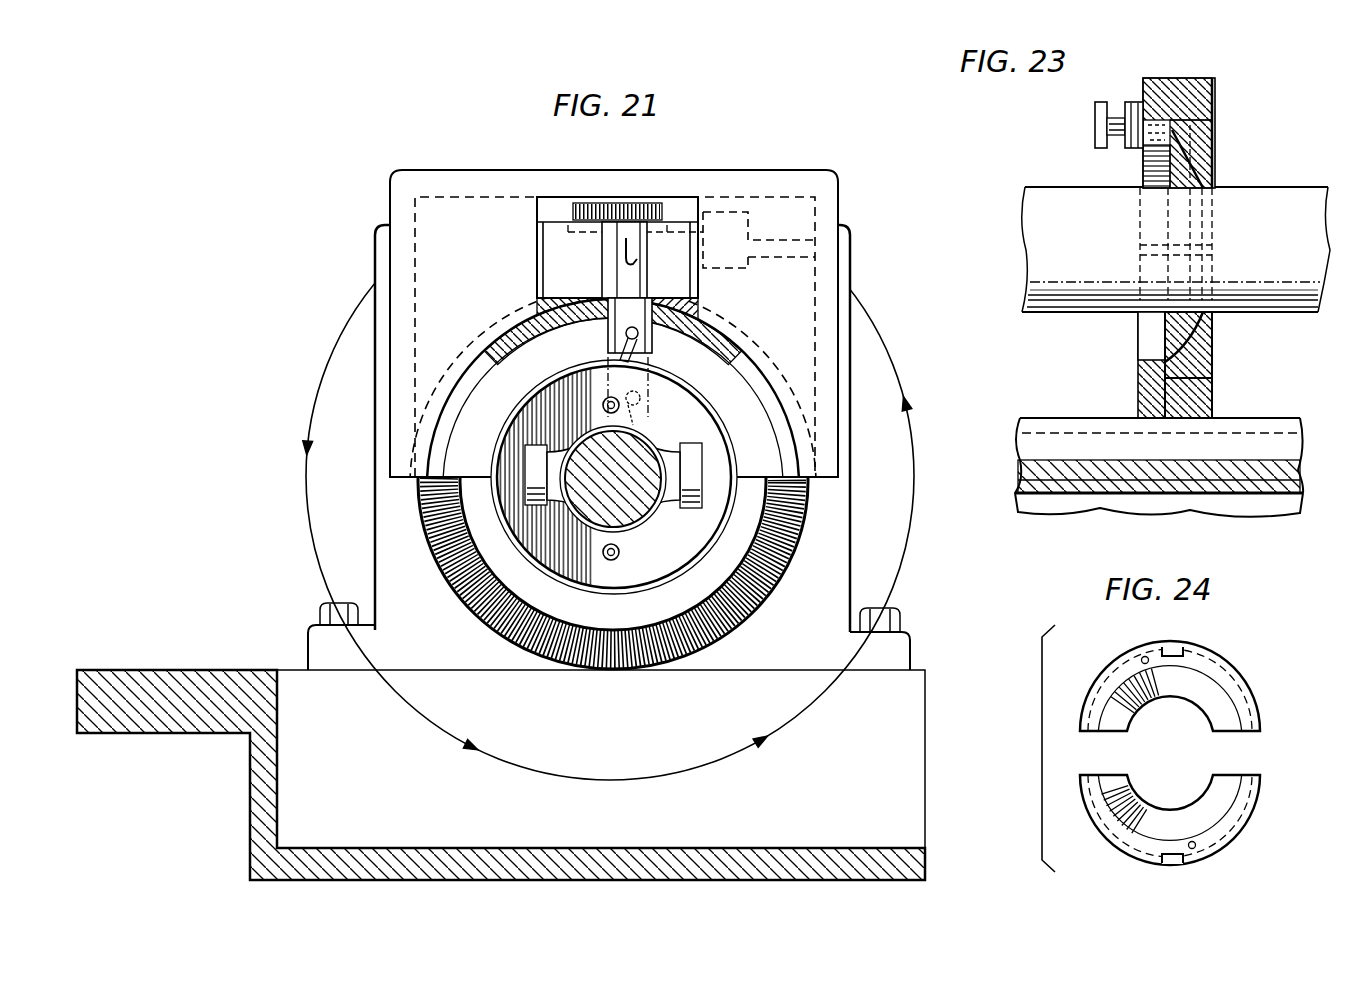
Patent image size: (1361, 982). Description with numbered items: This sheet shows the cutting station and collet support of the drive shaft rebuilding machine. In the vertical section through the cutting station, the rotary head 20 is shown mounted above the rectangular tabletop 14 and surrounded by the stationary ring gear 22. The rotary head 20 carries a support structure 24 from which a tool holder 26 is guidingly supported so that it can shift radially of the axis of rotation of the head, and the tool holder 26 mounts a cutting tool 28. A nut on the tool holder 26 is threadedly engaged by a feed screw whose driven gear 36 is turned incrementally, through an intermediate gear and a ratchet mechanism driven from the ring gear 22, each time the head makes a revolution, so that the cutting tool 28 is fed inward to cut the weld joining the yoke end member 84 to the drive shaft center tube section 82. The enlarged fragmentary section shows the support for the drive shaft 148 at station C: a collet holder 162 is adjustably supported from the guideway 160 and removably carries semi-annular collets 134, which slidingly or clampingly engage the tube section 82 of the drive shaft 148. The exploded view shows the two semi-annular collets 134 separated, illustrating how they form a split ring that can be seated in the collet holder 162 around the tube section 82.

In FIG. 21, the tabletop 14 is at (213, 668).
In FIG. 21, the rotary head 20 is at (553, 565).
In FIG. 21, the stationary ring gear 22 is at (752, 618).
In FIG. 21, the support structure 24 is at (445, 172).
In FIG. 21, the tool holder 26 is at (605, 278).
In FIG. 21, the cutting tool 28 is at (622, 362).
In FIG. 21, the driven gear 36 is at (640, 210).
In FIG. 21, the yoke end member 84 is at (674, 506).
In FIG. 23, the drive shaft center tube section 82 is at (1095, 280).
In FIG. 23, the semi-annular collets 134 is at (1215, 142).
In FIG. 24, the semi-annular collets 134 is at (1242, 705).
In FIG. 23, the drive shaft 148 is at (1068, 185).
In FIG. 23, the guideway 160 is at (1080, 425).
In FIG. 23, the collet holders 162 is at (1200, 78).